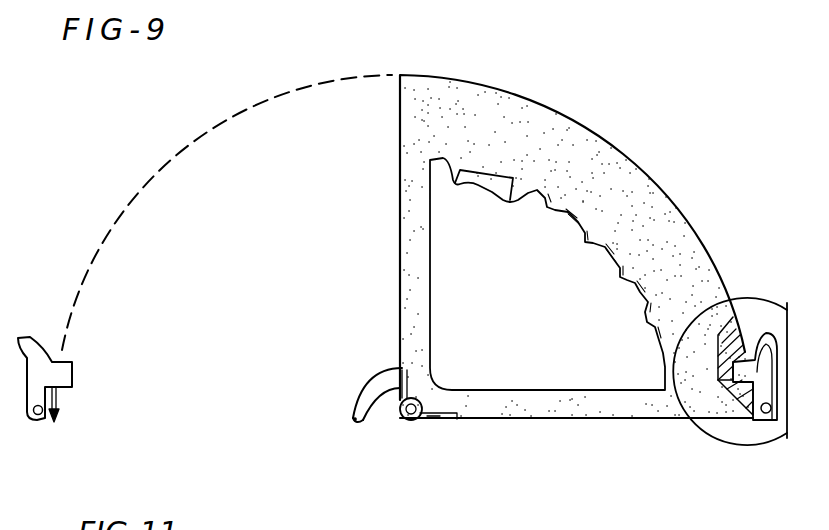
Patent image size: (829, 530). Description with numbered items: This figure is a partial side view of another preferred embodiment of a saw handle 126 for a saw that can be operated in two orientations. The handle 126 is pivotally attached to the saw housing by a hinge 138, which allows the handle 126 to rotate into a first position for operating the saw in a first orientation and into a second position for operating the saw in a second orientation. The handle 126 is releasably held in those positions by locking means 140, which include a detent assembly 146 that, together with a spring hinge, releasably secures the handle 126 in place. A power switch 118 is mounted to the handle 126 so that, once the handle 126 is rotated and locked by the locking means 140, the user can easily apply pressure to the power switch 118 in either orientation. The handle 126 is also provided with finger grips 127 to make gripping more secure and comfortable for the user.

The handle 126 is at (624, 136).
The power switch 118 is at (490, 183).
The finger grips 127 is at (605, 254).
The hinge 138 is at (420, 420).
The locking means 140 is at (725, 440).
The detent assembly 146 is at (78, 368).